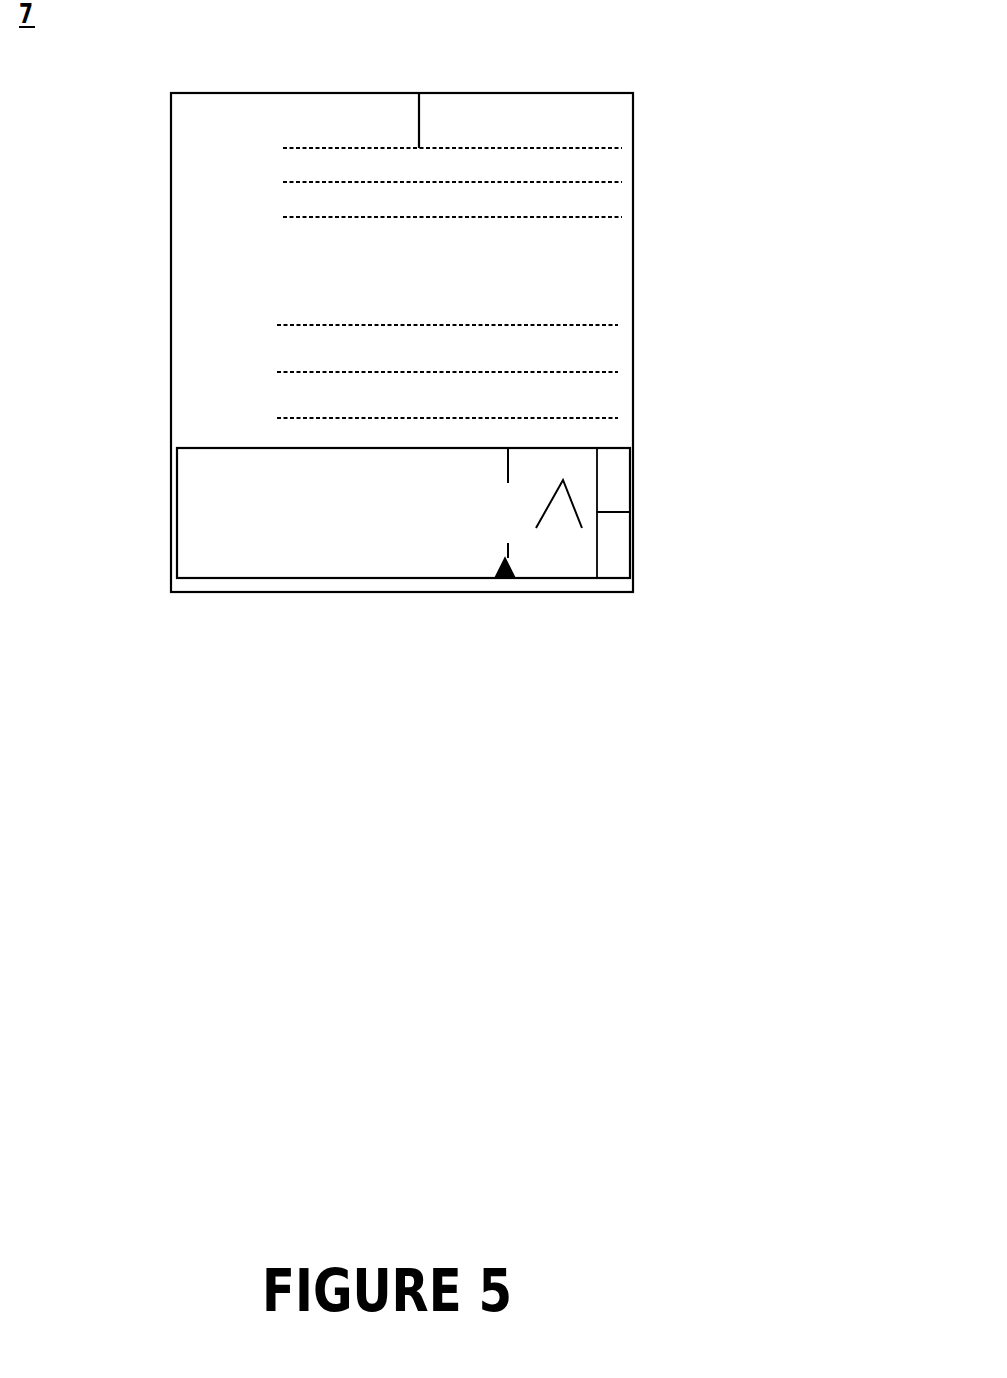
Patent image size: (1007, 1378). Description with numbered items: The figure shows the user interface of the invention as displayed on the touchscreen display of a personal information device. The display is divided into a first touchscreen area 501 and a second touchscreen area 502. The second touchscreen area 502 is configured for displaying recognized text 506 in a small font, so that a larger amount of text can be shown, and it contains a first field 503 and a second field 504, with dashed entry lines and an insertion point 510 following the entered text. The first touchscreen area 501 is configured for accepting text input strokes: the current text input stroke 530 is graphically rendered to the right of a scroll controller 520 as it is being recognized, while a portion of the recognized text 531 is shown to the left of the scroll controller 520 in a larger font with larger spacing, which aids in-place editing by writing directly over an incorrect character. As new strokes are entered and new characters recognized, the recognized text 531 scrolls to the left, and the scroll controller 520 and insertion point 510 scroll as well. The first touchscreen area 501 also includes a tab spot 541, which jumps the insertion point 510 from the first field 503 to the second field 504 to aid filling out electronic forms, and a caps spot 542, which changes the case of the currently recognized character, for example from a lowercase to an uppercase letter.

The first touchscreen area 501 is at (173, 485).
The second touchscreen area 502 is at (170, 221).
The first field 503 is at (216, 120).
The second field 504 is at (172, 308).
The recognized text 506 is at (326, 121).
The insertion point 510 is at (423, 112).
The scroll controller 520 is at (507, 582).
The text input stroke 530 is at (578, 500).
The recognized text 531 is at (285, 532).
The tab spot 541 is at (623, 467).
The caps spot 542 is at (623, 549).